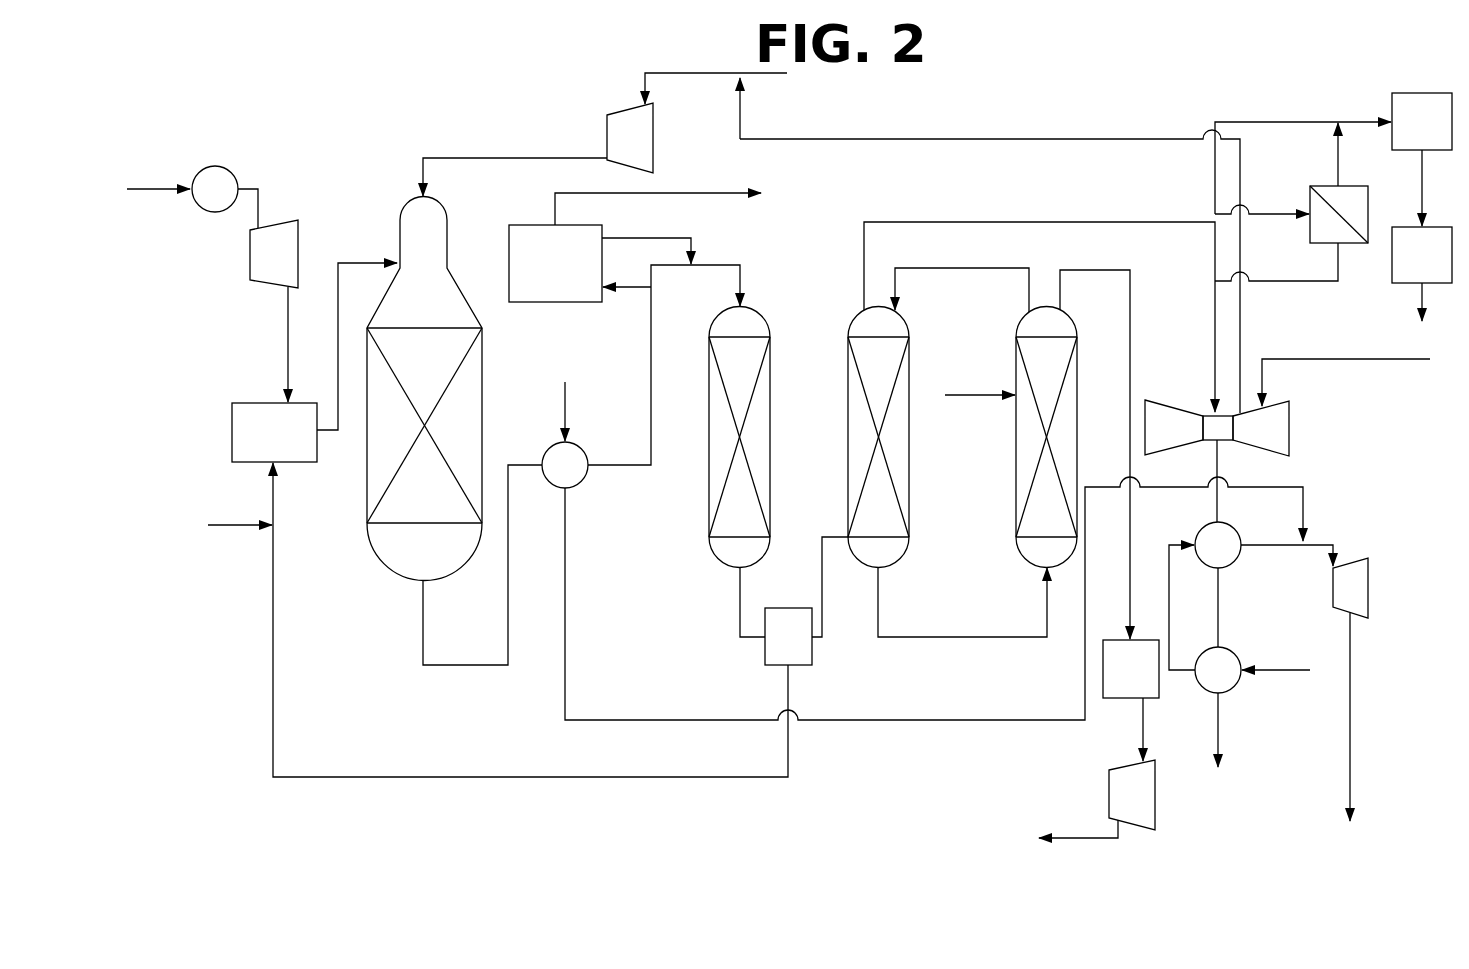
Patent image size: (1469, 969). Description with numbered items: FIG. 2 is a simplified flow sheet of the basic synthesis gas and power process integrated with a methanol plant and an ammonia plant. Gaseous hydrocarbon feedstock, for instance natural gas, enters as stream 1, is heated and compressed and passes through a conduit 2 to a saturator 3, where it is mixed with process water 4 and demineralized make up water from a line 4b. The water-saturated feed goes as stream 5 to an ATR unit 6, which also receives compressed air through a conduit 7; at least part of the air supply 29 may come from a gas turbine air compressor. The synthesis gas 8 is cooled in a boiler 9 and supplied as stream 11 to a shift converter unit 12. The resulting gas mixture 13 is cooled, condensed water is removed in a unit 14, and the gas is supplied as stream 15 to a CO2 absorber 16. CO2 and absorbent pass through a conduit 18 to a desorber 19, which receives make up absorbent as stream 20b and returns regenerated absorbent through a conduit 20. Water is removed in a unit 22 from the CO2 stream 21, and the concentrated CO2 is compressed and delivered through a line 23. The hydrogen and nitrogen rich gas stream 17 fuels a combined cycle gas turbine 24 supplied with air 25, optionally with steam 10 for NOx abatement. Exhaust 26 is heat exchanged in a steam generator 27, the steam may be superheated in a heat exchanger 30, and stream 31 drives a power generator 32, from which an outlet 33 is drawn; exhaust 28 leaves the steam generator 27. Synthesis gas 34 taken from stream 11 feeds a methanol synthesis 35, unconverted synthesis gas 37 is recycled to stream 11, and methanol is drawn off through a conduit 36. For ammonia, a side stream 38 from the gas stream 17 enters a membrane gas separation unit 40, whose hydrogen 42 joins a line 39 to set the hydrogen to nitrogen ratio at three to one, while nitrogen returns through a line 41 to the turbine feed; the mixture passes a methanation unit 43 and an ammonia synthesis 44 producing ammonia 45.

The stream 1 is at (160, 188).
The conduit 2 is at (288, 341).
The saturator 3 is at (261, 442).
The process water 4 is at (273, 628).
The line 4b is at (226, 525).
The stream 5 is at (361, 262).
The ATR unit 6 is at (406, 379).
The conduit 7 is at (528, 156).
The synthesis gas 8 is at (471, 663).
The boiler 9 is at (553, 479).
The steam 10 is at (568, 672).
The stream 11 is at (619, 464).
The shift converter unit 12 is at (724, 369).
The gas mixture 13 is at (739, 602).
The unit 14 is at (773, 649).
The stream 15 is at (824, 536).
The CO2 absorber 16 is at (863, 369).
The gas stream 17 is at (999, 221).
The conduit 18 is at (968, 637).
The desorber 19 is at (1031, 369).
The conduit 20 is at (1001, 268).
The stream 20b is at (974, 394).
The CO2 stream 21 is at (1099, 269).
The unit 22 is at (1116, 684).
The line 23 is at (1078, 836).
The combined cycle gas turbine 24 is at (1148, 441).
The air 25 is at (1374, 358).
The exhaust 26 is at (1186, 488).
The steam generator 27 is at (1203, 684).
The exhaust 28 is at (1218, 770).
The air supply 29 is at (1181, 138).
The heat exchanger 30 is at (1203, 559).
The stream 31 is at (1274, 545).
The power generator 32 is at (1370, 586).
The exhaust line 33 is at (1350, 824).
The synthesis gas 34 is at (634, 285).
The methanol synthesis 35 is at (540, 274).
The conduit 36 is at (726, 192).
The unconverted synthesis gas 37 is at (671, 237).
The side stream 38 is at (1278, 213).
The line 39 is at (1329, 122).
The membrane gas separation unit 40 is at (1337, 212).
The line 41 is at (1289, 279).
The hydrogen 42 is at (1340, 158).
The methanation unit 43 is at (1407, 132).
The ammonia synthesis 44 is at (1407, 269).
The ammonia 45 is at (1422, 325).